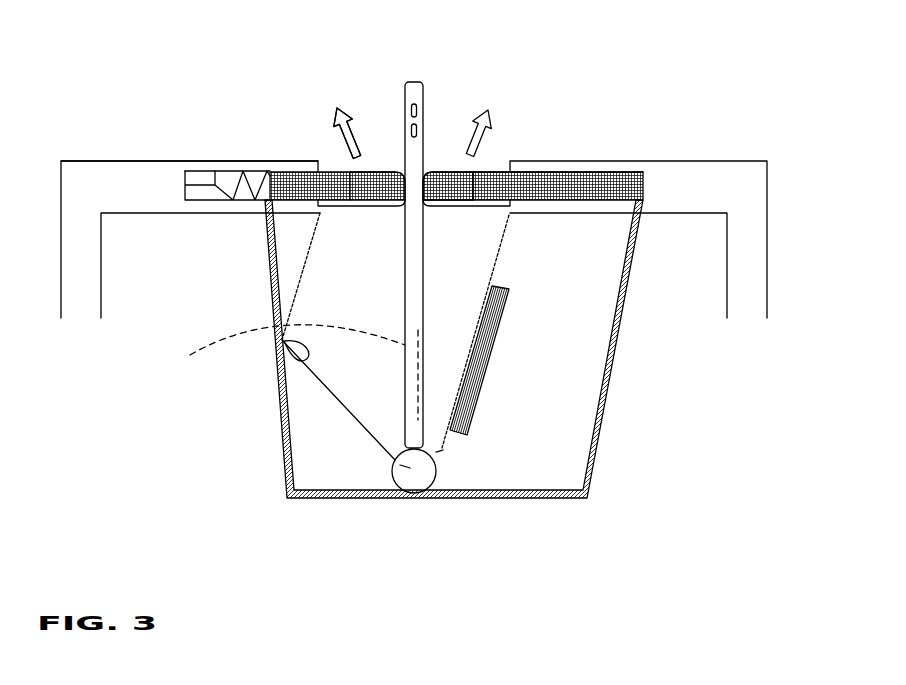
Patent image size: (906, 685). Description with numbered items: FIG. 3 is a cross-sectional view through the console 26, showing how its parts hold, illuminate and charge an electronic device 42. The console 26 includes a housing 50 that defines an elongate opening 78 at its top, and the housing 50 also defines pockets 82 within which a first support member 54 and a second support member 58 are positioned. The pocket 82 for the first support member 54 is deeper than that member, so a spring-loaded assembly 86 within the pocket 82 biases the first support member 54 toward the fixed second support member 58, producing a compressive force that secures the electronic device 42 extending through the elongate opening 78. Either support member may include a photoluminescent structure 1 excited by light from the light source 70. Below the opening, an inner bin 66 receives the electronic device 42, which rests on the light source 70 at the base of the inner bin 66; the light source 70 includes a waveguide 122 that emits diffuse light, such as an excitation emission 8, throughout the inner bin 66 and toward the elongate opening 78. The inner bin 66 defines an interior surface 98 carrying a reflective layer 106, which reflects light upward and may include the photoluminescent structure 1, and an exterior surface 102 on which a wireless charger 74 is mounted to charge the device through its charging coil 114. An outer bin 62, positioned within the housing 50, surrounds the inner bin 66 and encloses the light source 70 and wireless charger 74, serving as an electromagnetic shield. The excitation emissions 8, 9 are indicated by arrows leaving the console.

The console 26 is at (693, 120).
The housing 50 is at (757, 205).
The pocket 82 is at (202, 184).
The spring-loaded assembly 86 is at (228, 168).
The first support member 54 is at (298, 188).
The second support member 58 is at (498, 168).
The elongate opening 78 is at (450, 198).
The photoluminescent structure 1 is at (343, 180).
The excitation emission 8 is at (348, 200).
The fiber direction 9 is at (348, 200).
The electronic device 42 is at (414, 82).
The outer bin 62 is at (597, 460).
The reflective layer 106 is at (500, 250).
The wireless charger 74 is at (480, 352).
The inner bin 66 is at (333, 405).
The interior surface 98 is at (303, 358).
The charging coil 114 is at (283, 372).
The light source 70 is at (420, 468).
The waveguide 122 is at (408, 468).
The exterior surface 102 is at (443, 450).